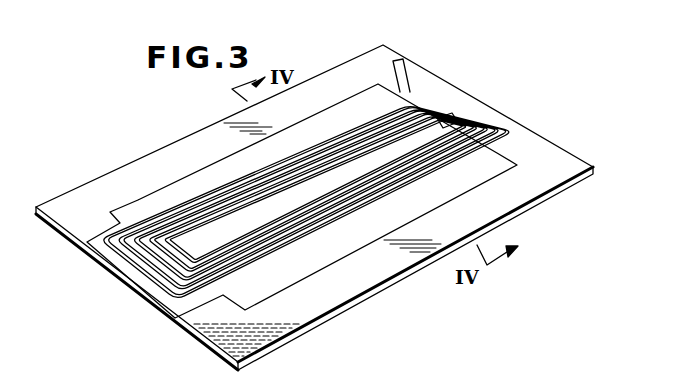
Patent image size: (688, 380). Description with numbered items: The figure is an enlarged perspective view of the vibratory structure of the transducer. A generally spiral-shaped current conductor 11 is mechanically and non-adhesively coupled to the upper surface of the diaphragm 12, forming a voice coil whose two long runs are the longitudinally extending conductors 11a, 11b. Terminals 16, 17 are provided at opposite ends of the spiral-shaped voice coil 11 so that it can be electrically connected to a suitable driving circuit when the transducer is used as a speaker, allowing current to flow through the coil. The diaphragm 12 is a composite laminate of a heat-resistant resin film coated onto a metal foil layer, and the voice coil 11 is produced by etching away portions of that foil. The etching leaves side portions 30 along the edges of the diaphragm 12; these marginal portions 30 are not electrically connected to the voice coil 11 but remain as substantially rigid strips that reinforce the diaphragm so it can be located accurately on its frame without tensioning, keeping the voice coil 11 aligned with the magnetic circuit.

The current conductor 11 is at (302, 207).
The longitudinally extending conductor 11a is at (232, 187).
The longitudinally extending conductor 11b is at (325, 225).
The diaphragm 12 is at (563, 117).
The terminal 16 is at (421, 78).
The terminal 17 is at (451, 123).
The side portions 30 is at (148, 165).